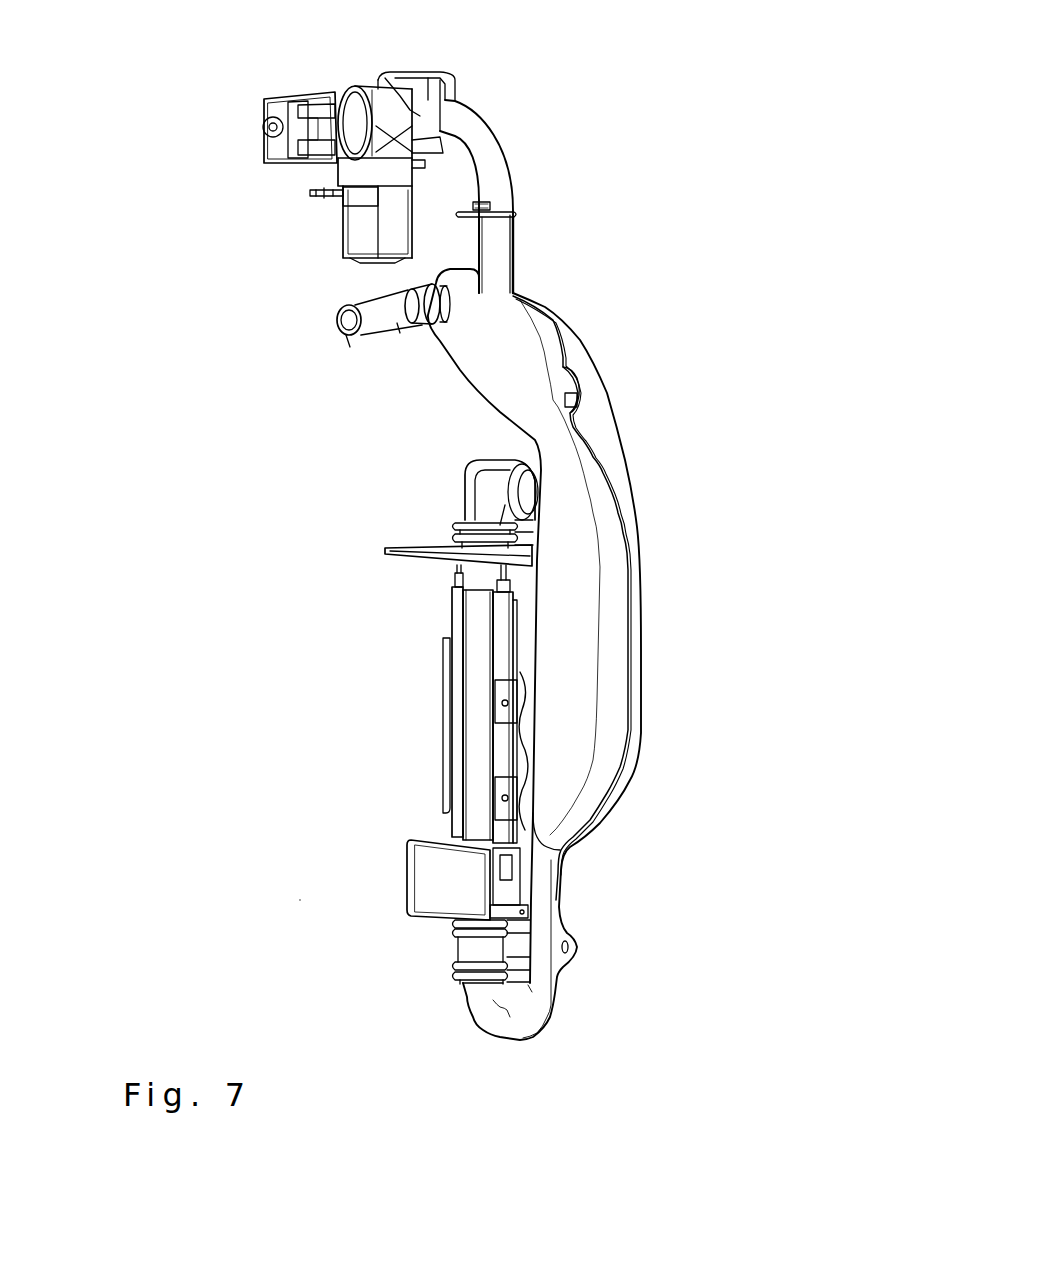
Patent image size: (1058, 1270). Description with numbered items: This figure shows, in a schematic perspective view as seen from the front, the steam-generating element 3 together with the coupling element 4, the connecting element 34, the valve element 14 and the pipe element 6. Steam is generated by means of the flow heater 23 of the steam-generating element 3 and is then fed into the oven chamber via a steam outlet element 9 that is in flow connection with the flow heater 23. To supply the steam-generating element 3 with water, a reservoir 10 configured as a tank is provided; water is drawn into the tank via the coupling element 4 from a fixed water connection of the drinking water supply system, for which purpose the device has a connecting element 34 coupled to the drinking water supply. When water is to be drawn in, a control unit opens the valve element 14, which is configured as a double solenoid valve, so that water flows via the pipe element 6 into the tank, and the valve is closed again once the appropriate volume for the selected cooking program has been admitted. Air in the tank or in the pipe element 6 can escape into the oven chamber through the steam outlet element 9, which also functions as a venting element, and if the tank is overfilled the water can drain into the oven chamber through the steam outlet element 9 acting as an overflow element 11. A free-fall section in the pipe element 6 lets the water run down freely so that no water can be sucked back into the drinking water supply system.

The steam-generating element 3 is at (232, 878).
The coupling element 4 is at (522, 171).
The pipe element 6 is at (495, 262).
The steam outlet element 9 is at (348, 320).
The reservoir 10 is at (578, 640).
The overflow element 11 is at (340, 333).
The valve element 14 is at (360, 170).
The flow heater 23 is at (475, 645).
The connecting element 34 is at (467, 95).